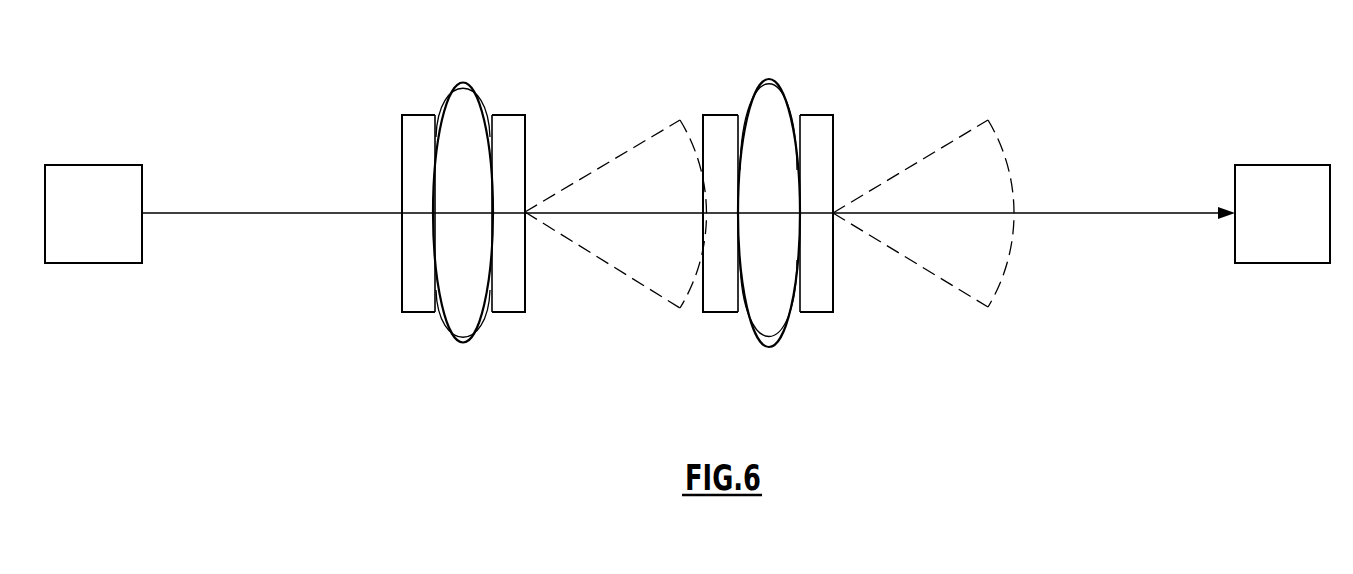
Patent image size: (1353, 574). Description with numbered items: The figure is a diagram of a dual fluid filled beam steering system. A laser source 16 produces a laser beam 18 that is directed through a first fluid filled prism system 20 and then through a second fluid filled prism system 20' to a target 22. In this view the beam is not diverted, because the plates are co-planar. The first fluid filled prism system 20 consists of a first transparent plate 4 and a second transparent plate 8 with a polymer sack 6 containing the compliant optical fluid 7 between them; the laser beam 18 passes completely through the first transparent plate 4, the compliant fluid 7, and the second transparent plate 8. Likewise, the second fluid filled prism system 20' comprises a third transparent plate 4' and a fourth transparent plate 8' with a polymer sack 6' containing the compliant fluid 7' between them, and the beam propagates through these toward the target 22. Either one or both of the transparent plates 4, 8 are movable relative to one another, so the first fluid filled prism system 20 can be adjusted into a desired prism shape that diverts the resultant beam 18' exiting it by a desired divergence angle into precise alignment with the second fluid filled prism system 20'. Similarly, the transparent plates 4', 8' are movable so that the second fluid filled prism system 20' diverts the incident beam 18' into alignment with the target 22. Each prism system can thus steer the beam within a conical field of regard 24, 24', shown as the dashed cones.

The laser source 16 is at (91, 176).
The laser beam 18 is at (270, 211).
The resultant beam 18′ is at (617, 178).
The target 22 is at (1281, 176).
The first transparent plate 4 is at (416, 265).
The second transparent plate 8 is at (505, 312).
The polymer sack 6 is at (458, 72).
The compliant fluid 7 is at (453, 307).
The first fluid filled prism system 20 is at (475, 340).
The conical field of regard 24 is at (640, 302).
The third transparent plate 4′ is at (719, 126).
The fourth transparent plate 8′ is at (818, 114).
The polymer sack 6′ is at (806, 343).
The compliant fluid 7′ is at (766, 105).
The second fluid filled prism system 20′ is at (761, 347).
The conical field of regard 24′ is at (925, 178).